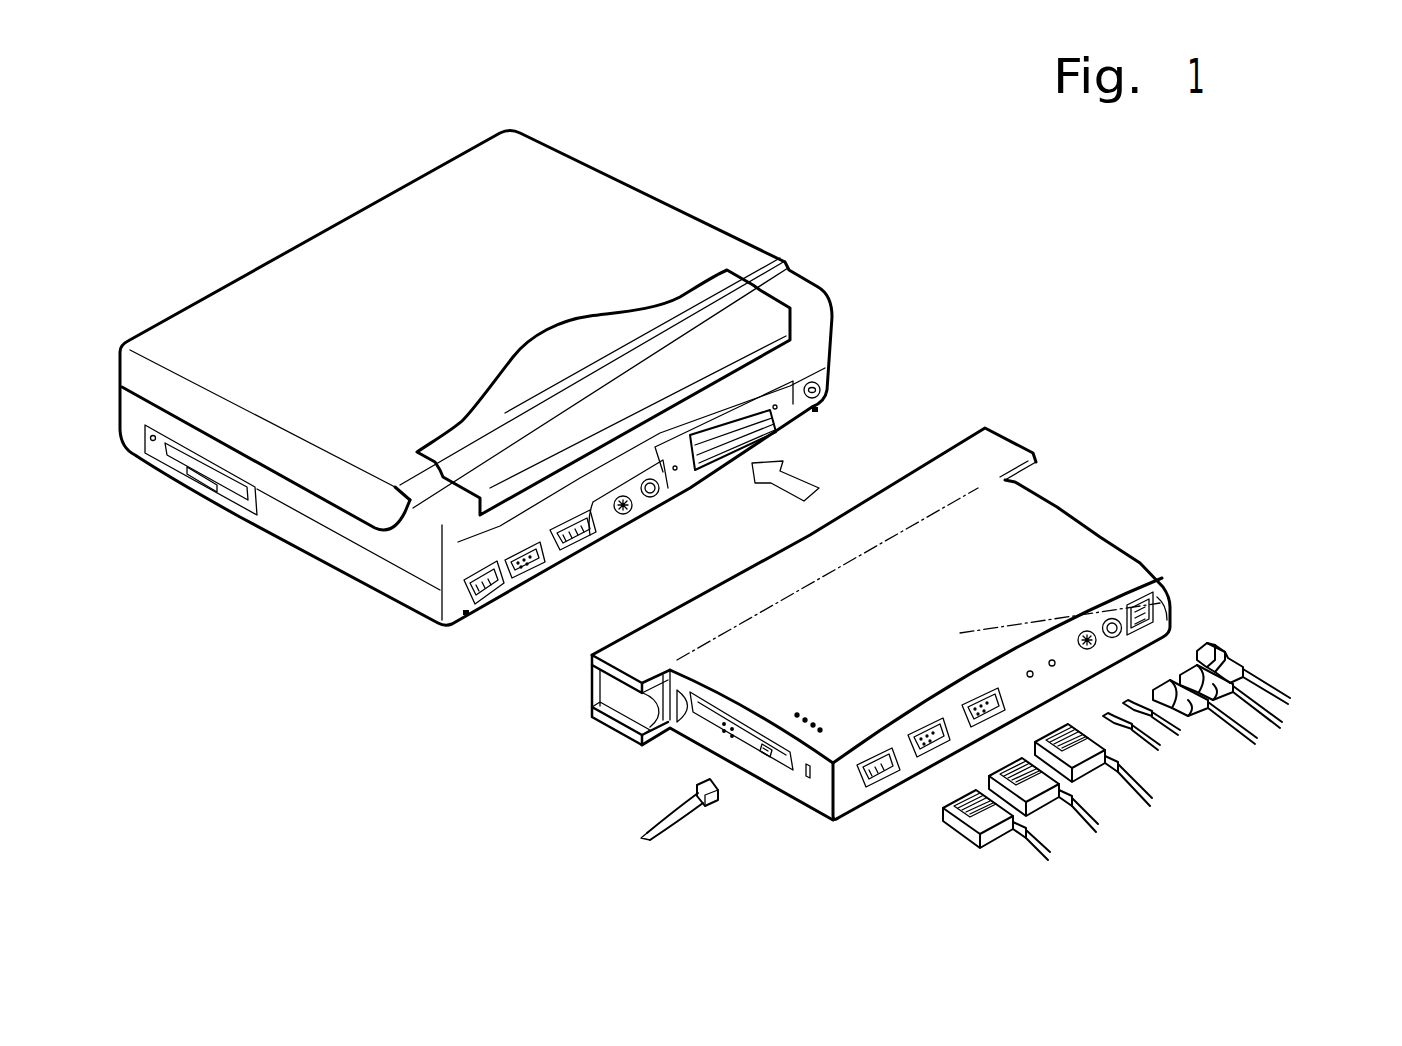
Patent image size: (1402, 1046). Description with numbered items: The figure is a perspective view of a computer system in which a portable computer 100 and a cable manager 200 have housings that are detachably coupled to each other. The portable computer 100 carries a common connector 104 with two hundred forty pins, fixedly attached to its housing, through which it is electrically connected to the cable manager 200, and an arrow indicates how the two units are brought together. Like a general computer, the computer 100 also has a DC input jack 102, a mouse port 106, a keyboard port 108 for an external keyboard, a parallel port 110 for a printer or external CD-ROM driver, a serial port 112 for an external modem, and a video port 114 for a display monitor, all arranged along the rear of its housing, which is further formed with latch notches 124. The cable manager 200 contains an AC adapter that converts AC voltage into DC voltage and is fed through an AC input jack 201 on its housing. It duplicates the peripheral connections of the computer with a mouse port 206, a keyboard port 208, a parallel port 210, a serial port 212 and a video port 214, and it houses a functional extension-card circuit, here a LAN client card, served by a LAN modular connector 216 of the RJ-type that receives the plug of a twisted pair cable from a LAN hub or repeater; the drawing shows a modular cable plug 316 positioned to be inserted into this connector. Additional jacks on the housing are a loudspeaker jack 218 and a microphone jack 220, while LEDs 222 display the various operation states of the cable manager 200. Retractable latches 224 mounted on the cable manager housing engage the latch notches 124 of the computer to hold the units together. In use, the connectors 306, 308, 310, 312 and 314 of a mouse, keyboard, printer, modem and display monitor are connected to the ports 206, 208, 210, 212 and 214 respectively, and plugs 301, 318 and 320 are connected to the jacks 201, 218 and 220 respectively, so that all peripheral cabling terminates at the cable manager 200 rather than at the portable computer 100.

The portable computer 100 is at (735, 195).
The DC input jack 102 is at (821, 398).
The common connector 104 is at (717, 463).
The mouse port 106 is at (660, 495).
The keyboard port 108 is at (627, 512).
The parallel port 110 is at (587, 543).
The serial port 112 is at (498, 590).
The video port 114 is at (552, 565).
The latch notches 124 is at (815, 412).
The cable manager 200 is at (1075, 437).
The AC input jack 201 is at (1168, 617).
The mouse port 206 is at (1113, 617).
The keyboard port 208 is at (1087, 630).
The parallel port 210 is at (975, 690).
The serial port 212 is at (880, 750).
The video port 214 is at (927, 720).
The LAN modular connector 216 is at (767, 753).
The loudspeaker jack 218 is at (1052, 659).
The microphone jack 220 is at (1029, 670).
The LEDs 222 is at (807, 700).
The retractable latches 224 is at (597, 683).
The plug 301 is at (1283, 692).
The mouse connector 306 is at (1262, 722).
The keyboard connector 308 is at (1230, 728).
The printer connector 310 is at (1123, 782).
The modem connector 312 is at (1018, 845).
The display monitor connector 314 is at (1070, 815).
The modular cable connector 316 is at (690, 807).
The plug 318 is at (1163, 730).
The plug 320 is at (1140, 740).